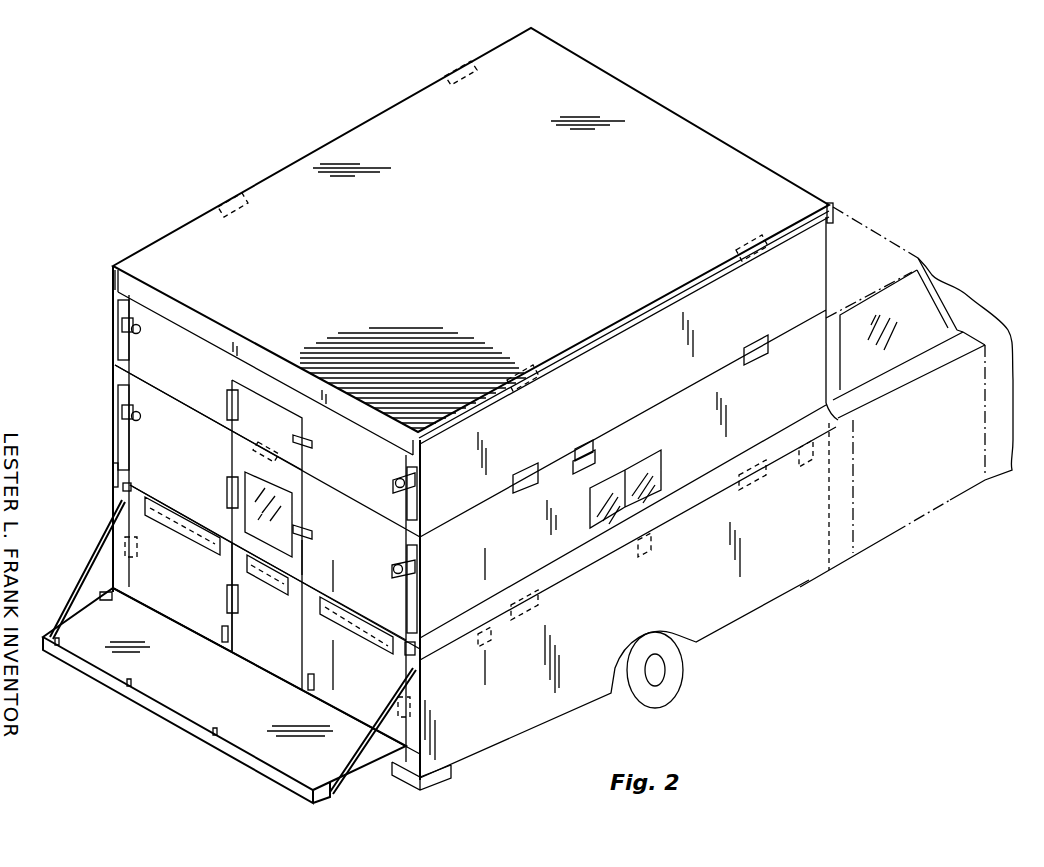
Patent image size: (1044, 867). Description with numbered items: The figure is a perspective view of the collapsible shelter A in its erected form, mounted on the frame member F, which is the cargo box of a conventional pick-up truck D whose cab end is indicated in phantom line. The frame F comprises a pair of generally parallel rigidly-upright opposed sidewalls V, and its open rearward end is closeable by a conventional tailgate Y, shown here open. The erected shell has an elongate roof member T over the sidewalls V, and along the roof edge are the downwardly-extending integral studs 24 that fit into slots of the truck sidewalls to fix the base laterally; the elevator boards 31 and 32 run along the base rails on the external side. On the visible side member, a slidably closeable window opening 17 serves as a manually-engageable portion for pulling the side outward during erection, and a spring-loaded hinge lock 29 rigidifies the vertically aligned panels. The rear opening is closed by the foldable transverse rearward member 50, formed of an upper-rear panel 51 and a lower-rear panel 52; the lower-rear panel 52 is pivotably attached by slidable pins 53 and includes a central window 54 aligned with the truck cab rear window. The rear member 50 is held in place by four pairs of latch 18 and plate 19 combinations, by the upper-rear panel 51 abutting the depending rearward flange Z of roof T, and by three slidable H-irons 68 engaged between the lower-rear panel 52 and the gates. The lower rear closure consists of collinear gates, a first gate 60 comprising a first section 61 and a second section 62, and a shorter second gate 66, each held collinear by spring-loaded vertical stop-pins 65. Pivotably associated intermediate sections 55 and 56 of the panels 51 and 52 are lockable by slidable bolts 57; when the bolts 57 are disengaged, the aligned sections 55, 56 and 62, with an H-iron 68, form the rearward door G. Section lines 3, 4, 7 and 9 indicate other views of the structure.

The collapsible shelter A is at (357, 124).
The roof member T is at (518, 234).
The depending rearward flange Z is at (838, 212).
The rearward door G is at (262, 392).
The pick-up truck D is at (957, 483).
The frame member F is at (770, 604).
The sidewalls V is at (692, 592).
The tailgate Y is at (177, 717).
The section line 3 is at (113, 200).
The section line 4 is at (708, 47).
The section line 7 is at (487, 562).
The section line 9 is at (335, 570).
The window opening 17 is at (662, 458).
The latch 18 is at (141, 331).
The plate 19 is at (118, 322).
The studs 24 is at (657, 548).
The spring-loaded hinge lock 29 is at (579, 442).
The elevator board 31 is at (112, 475).
The elevator board 32 is at (606, 557).
The transverse rearward member 50 is at (192, 292).
The upper-rear panel 51 is at (203, 376).
The lower-rear panel 52 is at (201, 466).
The slidable pins 53 is at (131, 487).
The central window 54 is at (292, 513).
The intermediate section 55 is at (283, 430).
The intermediate section 56 is at (300, 553).
The slidable bolt 57 is at (312, 443).
The first gate 60 is at (202, 615).
The first section 61 is at (194, 586).
The second section 62 is at (282, 639).
The stop-pins 65 is at (221, 641).
The second gate 66 is at (371, 701).
The slidable H-irons 68 is at (175, 515).